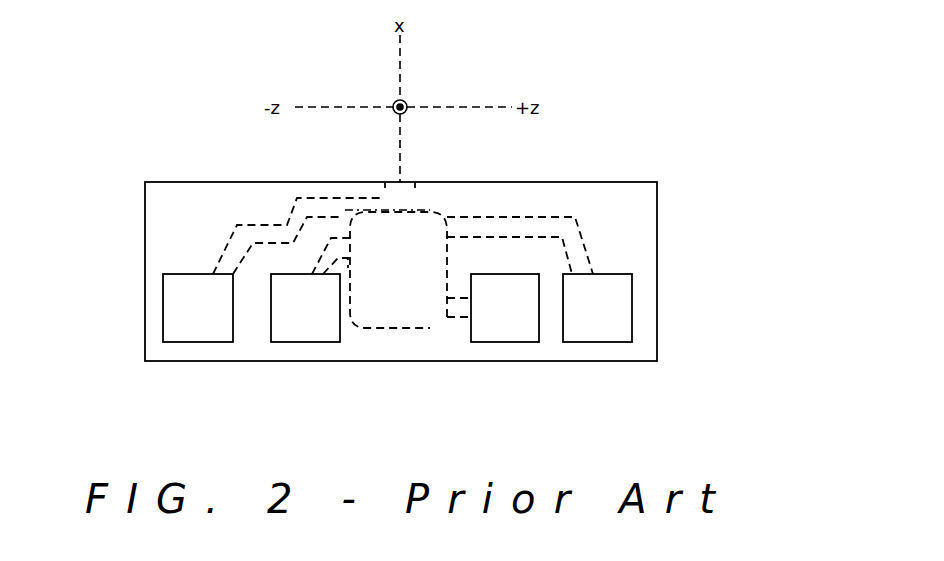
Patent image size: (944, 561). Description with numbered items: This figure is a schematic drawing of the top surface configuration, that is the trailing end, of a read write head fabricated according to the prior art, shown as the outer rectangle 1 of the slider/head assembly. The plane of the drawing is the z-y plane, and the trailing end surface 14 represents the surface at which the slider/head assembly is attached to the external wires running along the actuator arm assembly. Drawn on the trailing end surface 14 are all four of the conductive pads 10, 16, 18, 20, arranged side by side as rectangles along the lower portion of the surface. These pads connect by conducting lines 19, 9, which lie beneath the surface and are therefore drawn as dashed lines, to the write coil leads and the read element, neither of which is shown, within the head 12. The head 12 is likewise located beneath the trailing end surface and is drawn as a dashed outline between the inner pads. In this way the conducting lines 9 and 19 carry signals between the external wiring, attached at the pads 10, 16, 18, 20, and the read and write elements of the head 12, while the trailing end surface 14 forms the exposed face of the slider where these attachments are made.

The head assembly (prior art) 1 is at (160, 182).
The conducting line 9 is at (250, 233).
The conductive pad 10 is at (178, 312).
The head 12 is at (413, 213).
The trailing end surface 14 is at (163, 232).
The conductive pad 16 is at (300, 318).
The conductive pad 18 is at (500, 318).
The conducting line 19 is at (325, 243).
The conductive pad 20 is at (593, 318).